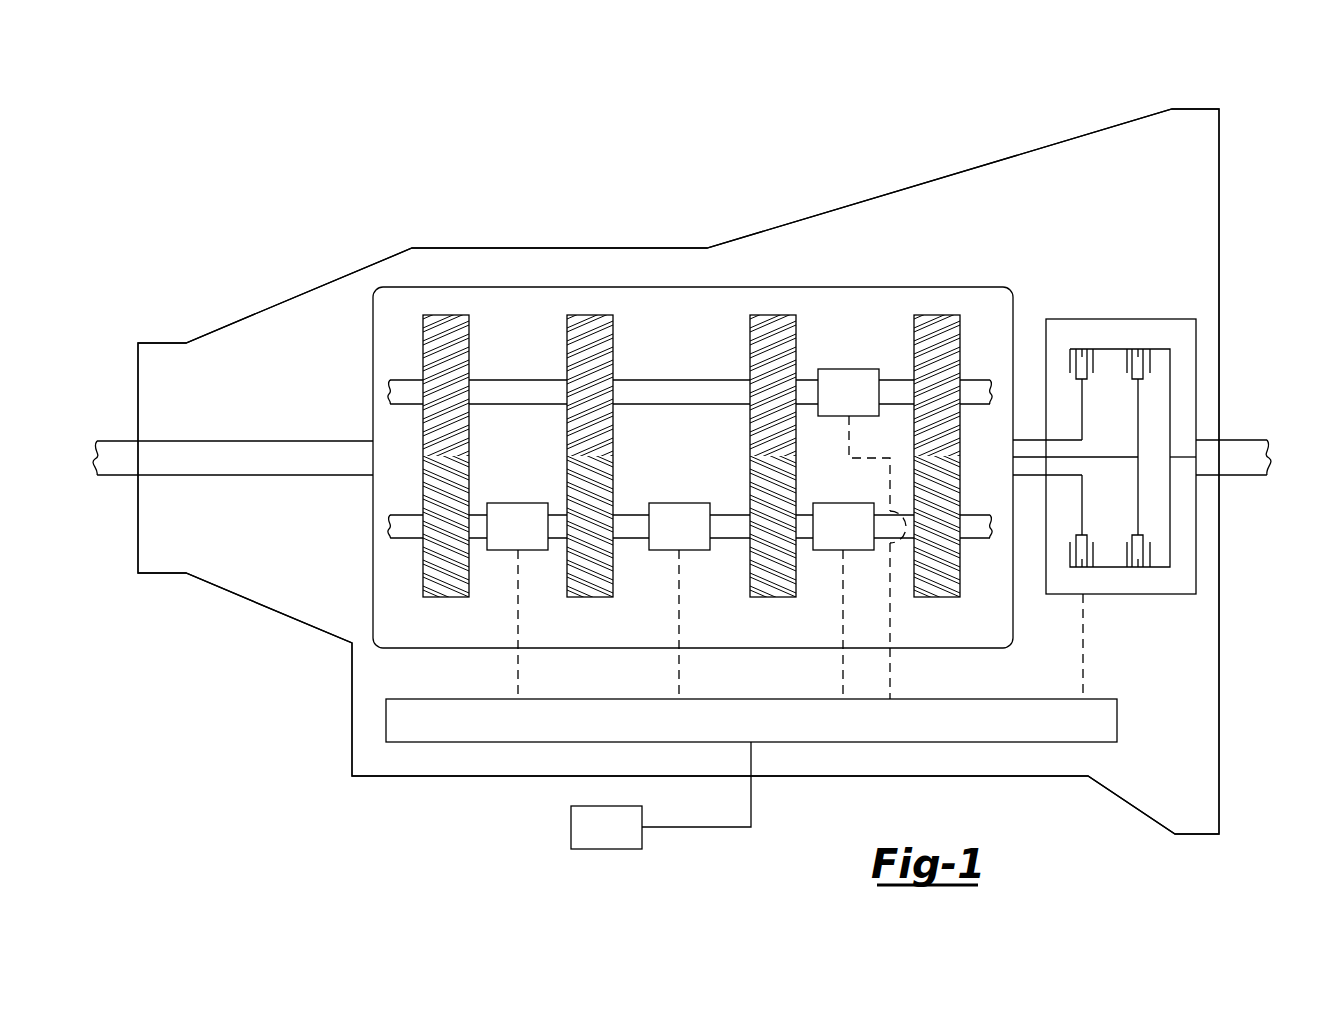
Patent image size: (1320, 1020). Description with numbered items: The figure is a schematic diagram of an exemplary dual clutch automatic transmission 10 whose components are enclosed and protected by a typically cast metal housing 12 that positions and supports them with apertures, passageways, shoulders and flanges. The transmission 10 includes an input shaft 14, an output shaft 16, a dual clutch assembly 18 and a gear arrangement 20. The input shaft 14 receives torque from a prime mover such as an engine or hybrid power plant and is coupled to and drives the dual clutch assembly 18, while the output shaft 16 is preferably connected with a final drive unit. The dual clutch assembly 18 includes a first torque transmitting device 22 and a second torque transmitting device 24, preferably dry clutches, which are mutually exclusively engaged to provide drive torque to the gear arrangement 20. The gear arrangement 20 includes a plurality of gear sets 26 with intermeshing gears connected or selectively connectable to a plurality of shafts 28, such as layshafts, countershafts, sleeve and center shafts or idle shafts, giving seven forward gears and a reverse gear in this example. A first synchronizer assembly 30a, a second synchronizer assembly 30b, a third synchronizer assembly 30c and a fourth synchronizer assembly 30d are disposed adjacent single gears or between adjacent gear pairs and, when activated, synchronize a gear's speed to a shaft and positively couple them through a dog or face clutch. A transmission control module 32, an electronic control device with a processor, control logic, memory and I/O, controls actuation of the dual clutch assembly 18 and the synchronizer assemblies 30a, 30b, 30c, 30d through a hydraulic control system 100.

The dual clutch transmission 10 is at (1257, 139).
The housing 12 is at (465, 247).
The input shaft 14 is at (1250, 440).
The output shaft 16 is at (110, 441).
The dual clutch assembly 18 is at (1118, 319).
The gear arrangement 20 is at (401, 287).
The first torque transmitting device 22 is at (1093, 557).
The second torque transmitting device 24 is at (1152, 557).
The gear sets 26 is at (567, 315).
The shafts 28 is at (635, 380).
The first synchronizer assembly 30a is at (506, 539).
The second synchronizer assembly 30b is at (667, 539).
The third synchronizer assembly 30c is at (831, 539).
The fourth synchronizer assembly 30d is at (837, 405).
The transmission control module 32 is at (594, 840).
The hydraulic control system 100 is at (736, 734).